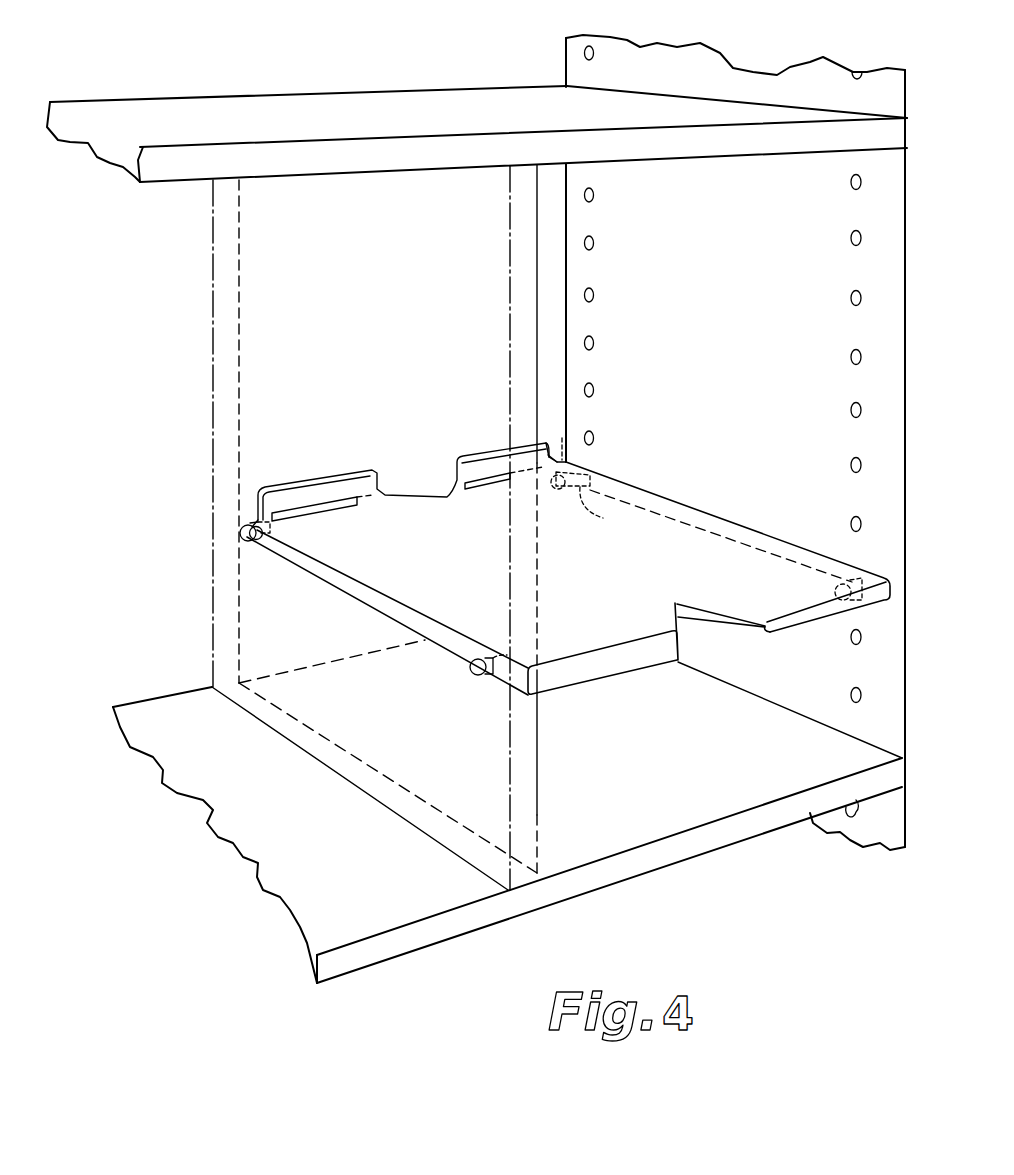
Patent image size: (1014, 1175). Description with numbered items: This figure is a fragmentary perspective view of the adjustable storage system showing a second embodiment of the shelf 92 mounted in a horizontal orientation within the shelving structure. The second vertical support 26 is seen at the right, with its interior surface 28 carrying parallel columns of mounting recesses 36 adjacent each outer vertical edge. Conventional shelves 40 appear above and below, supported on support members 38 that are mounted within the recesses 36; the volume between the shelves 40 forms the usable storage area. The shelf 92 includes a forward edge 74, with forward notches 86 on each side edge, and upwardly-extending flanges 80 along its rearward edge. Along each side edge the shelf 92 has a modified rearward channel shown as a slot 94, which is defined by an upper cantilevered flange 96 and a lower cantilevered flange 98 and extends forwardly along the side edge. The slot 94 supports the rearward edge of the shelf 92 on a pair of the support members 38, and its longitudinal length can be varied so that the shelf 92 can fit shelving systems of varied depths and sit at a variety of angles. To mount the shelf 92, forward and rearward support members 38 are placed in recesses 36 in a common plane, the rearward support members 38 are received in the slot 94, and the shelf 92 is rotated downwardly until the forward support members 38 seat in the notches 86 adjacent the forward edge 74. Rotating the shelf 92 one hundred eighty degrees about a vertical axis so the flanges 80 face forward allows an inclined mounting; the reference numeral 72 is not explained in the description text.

The second vertical support 26 is at (556, 63).
The interior surface 28 is at (680, 60).
The mounting recesses 36 is at (851, 357).
The support members 38 is at (248, 541).
The shelf 40 is at (383, 107).
The front rail 72 is at (462, 607).
The forward edge 74 is at (600, 672).
The upwardly-extending flanges 80 is at (319, 490).
The forward notches 86 is at (487, 656).
The shelf 92 is at (383, 617).
The slot 94 is at (250, 523).
The upper cantilevered flange 96 is at (268, 476).
The lower cantilevered flange 98 is at (554, 436).